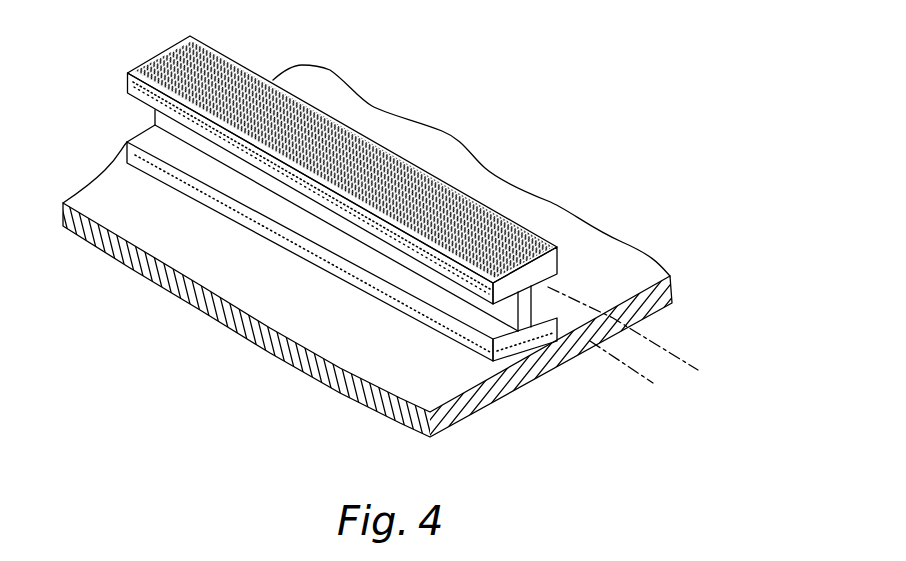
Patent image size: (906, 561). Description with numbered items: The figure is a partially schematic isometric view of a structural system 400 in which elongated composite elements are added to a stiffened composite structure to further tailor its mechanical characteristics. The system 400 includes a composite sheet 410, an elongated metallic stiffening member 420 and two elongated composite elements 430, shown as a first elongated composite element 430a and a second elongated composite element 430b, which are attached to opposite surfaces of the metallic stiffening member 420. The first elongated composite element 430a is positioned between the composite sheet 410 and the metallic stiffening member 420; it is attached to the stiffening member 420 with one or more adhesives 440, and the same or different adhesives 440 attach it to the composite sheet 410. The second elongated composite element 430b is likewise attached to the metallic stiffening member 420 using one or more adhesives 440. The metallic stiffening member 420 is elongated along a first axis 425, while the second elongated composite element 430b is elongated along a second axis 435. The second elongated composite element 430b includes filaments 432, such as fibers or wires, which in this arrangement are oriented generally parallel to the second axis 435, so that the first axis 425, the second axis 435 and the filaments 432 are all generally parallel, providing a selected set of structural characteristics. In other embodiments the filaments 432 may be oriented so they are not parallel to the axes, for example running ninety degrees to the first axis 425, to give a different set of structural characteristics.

The structural system 400 is at (426, 252).
The composite sheet 410 is at (674, 283).
The elongated metallic stiffening member 420 is at (548, 302).
The first axis 425 is at (736, 433).
The elongated composite element 430 is at (384, 225).
The first elongated composite element 430a is at (533, 348).
The second elongated composite element 430b is at (478, 208).
The filaments 432 is at (183, 280).
The second axis 435 is at (698, 370).
The adhesive 440 is at (538, 298).